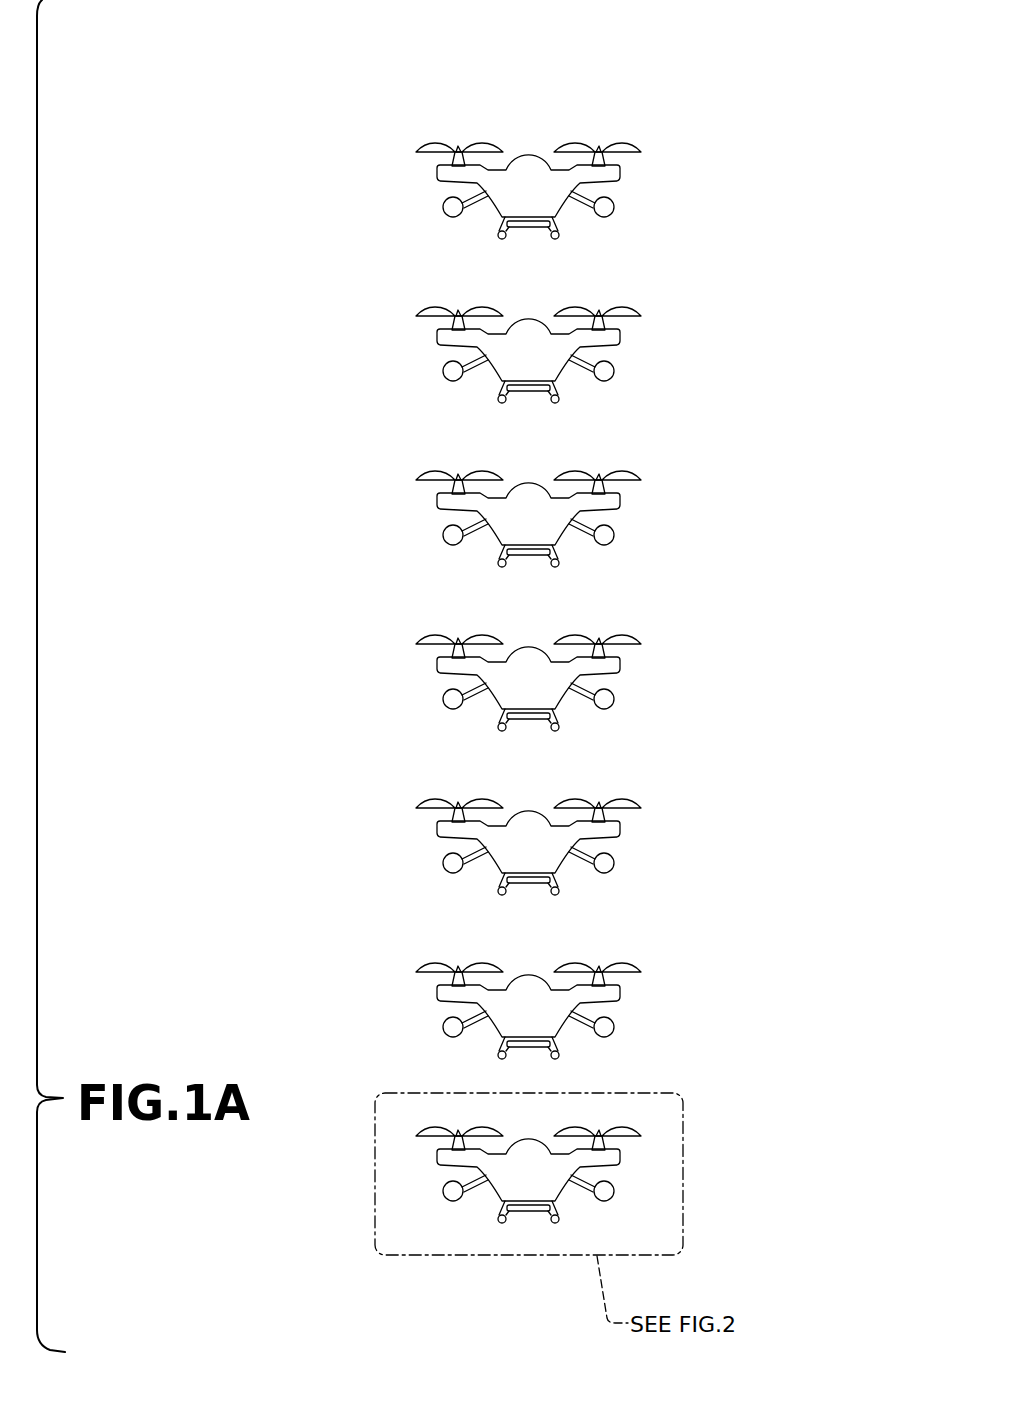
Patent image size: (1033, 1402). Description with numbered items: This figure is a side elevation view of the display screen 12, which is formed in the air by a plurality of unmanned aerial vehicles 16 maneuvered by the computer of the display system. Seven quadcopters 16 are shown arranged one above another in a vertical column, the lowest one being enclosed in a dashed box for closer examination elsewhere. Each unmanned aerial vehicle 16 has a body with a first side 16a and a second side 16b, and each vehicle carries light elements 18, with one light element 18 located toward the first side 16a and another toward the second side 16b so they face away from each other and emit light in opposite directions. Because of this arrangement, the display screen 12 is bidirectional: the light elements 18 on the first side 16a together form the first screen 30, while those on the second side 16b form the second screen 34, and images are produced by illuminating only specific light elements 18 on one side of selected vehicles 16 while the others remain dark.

The display screen 12 is at (673, 108).
The unmanned aerial vehicle 16 is at (530, 156).
The first side 16a is at (417, 191).
The second side 16b is at (639, 191).
The light element 18 is at (452, 217).
The first screen 30 is at (260, 268).
The second screen 34 is at (800, 268).